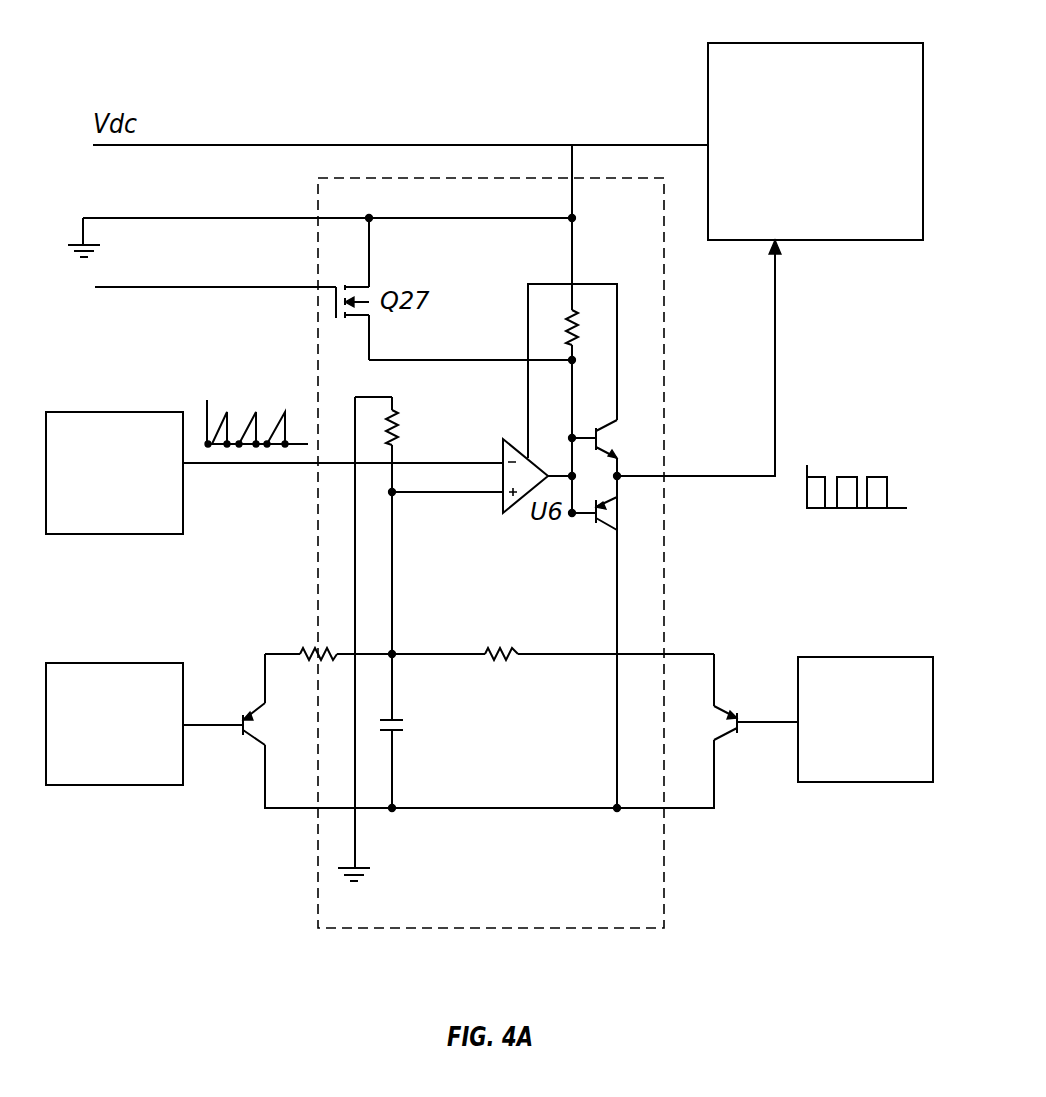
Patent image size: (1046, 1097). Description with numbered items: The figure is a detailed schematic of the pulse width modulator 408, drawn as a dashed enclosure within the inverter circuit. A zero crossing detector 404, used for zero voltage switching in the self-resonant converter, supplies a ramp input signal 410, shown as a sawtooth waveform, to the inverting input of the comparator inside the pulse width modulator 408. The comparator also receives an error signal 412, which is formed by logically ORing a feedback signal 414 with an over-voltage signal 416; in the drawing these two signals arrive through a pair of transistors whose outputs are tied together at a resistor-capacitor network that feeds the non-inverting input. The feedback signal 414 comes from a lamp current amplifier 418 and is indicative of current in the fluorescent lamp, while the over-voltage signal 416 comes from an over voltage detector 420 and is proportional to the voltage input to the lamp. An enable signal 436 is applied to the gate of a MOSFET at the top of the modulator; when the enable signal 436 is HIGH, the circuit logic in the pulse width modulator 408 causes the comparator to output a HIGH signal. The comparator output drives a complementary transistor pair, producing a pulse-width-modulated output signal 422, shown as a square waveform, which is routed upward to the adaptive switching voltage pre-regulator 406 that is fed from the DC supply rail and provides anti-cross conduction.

The zero crossing detector 404 is at (113, 412).
The synchronously switching voltage pre-regulator 406 is at (805, 43).
The pulse width modulator 408 is at (667, 865).
The ramp input signal 410 is at (223, 465).
The error signal 412 is at (417, 494).
The feedback signal 414 is at (748, 720).
The over-voltage signal 416 is at (211, 723).
The lamp current amplifier 418 is at (855, 657).
The over voltage detector 420 is at (113, 663).
The PWM output signal 422 is at (700, 476).
The enable signal 436 is at (168, 288).